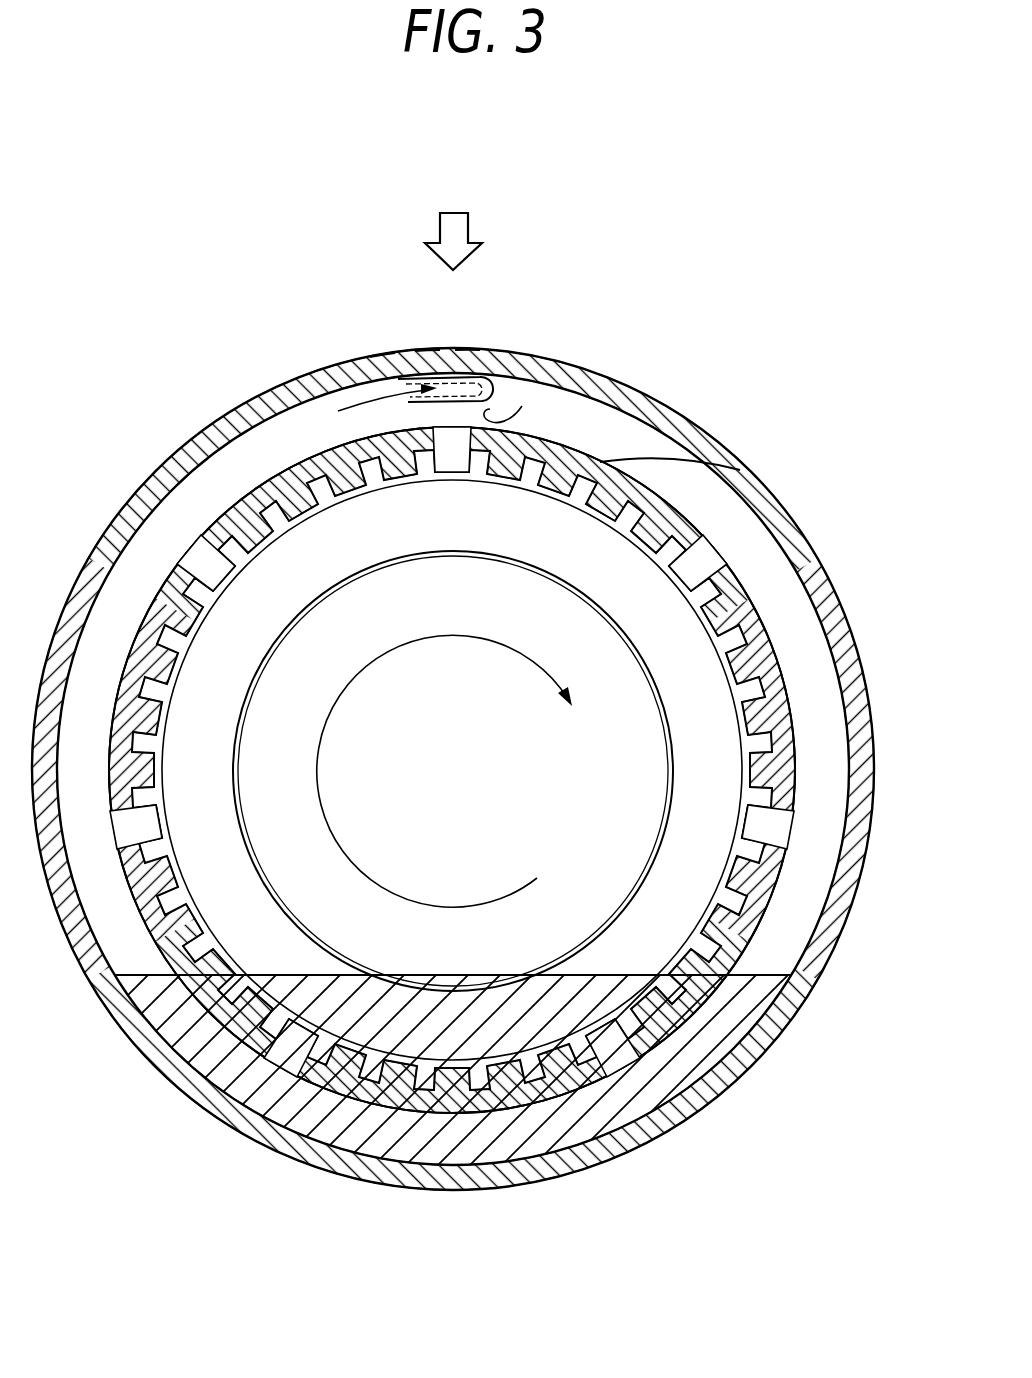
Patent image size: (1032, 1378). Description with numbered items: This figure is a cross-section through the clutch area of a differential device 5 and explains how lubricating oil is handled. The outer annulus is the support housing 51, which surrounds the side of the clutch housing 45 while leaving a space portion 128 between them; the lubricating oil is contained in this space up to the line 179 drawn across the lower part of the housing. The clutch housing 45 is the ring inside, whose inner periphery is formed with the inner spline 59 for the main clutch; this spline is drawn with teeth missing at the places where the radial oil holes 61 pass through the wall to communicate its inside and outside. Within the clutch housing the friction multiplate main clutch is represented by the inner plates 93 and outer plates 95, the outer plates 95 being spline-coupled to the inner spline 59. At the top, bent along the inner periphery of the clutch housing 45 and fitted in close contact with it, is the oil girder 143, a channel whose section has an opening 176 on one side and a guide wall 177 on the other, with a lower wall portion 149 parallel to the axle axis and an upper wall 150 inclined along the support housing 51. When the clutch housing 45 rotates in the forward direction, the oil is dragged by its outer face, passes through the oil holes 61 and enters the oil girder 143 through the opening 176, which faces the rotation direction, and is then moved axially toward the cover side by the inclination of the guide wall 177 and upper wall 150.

The developing device 5 is at (612, 255).
The clutch housing 45 is at (290, 478).
The support housing 51 is at (646, 368).
The inner spline 59 is at (407, 478).
The oil hole 61 is at (183, 548).
The inner plate 93 is at (640, 580).
The outer plate 95 is at (640, 500).
The space portion 128 is at (637, 447).
The oil girder 143 is at (470, 350).
The lower wall portion 149 is at (522, 406).
The upper wall 150 is at (427, 350).
The opening 176 is at (383, 355).
The guide wall 177 is at (515, 384).
The line 179 is at (757, 975).